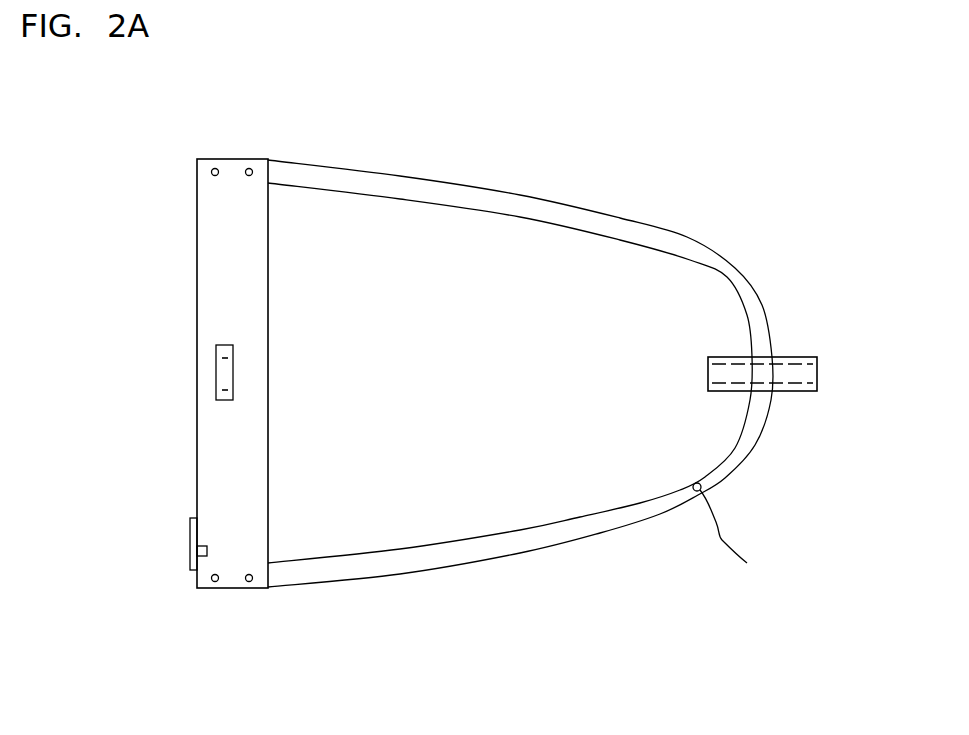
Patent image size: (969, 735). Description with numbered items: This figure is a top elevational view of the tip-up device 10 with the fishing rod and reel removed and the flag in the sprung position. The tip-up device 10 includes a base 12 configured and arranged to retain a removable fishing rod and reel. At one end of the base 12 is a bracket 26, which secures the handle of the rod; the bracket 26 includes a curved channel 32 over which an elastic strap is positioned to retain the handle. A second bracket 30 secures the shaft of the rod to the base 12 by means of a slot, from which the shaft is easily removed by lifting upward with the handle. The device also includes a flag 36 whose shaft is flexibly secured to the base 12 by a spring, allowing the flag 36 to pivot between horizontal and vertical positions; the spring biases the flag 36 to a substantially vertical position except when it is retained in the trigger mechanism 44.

The tip-up device 10 is at (664, 184).
The base 12 is at (578, 528).
The bracket 26 is at (793, 357).
The curved channel 32 is at (798, 377).
The bracket 30 is at (218, 369).
The flag 36 is at (722, 538).
The trigger mechanism 44 is at (190, 535).